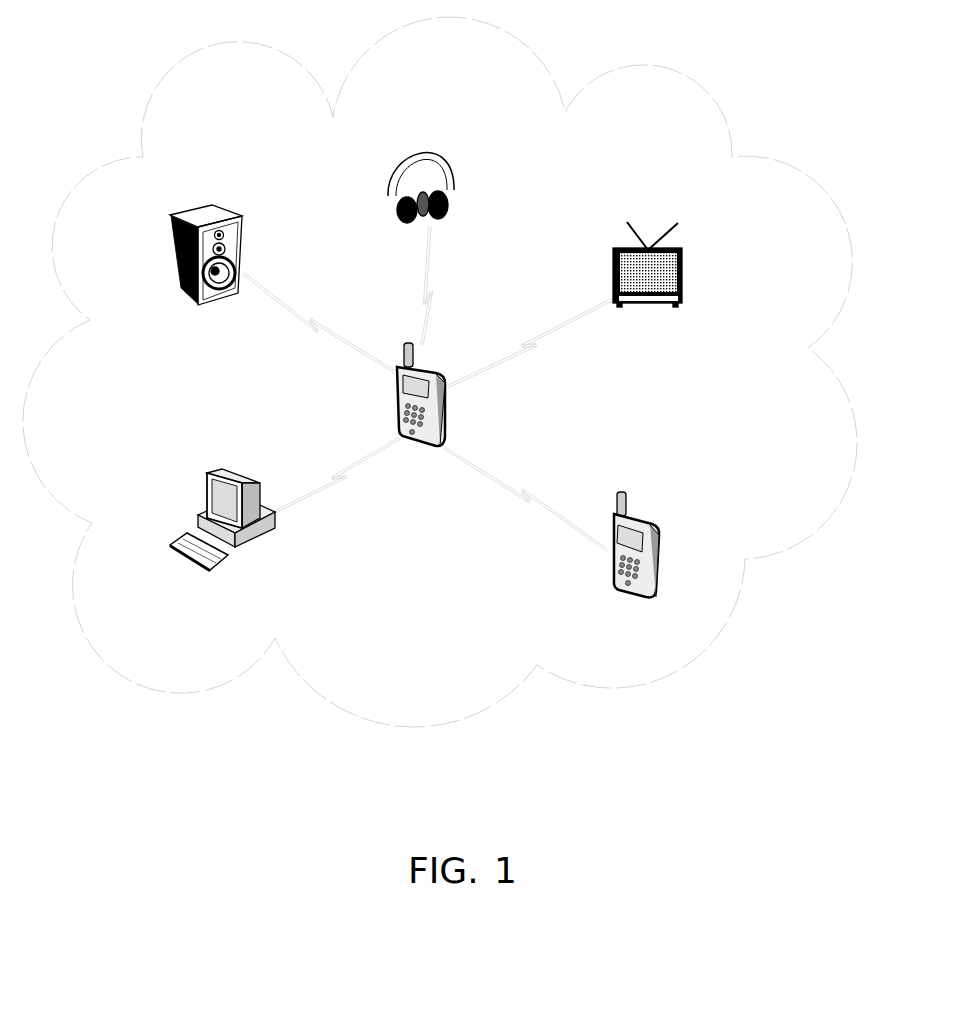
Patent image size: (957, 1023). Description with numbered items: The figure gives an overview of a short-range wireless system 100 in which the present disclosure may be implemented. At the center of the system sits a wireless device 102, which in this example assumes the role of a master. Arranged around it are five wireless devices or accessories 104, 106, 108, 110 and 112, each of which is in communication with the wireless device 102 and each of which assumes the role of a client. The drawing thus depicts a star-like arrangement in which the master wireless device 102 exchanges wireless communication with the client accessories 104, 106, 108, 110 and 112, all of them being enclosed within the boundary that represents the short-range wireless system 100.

The short-range wireless system 100 is at (518, 44).
The wireless device 102 is at (438, 370).
The wireless device or accessory 104 is at (682, 250).
The wireless device or accessory 106 is at (636, 515).
The wireless device or accessory 108 is at (248, 472).
The wireless device or accessory 110 is at (228, 205).
The wireless device or accessory 112 is at (440, 153).